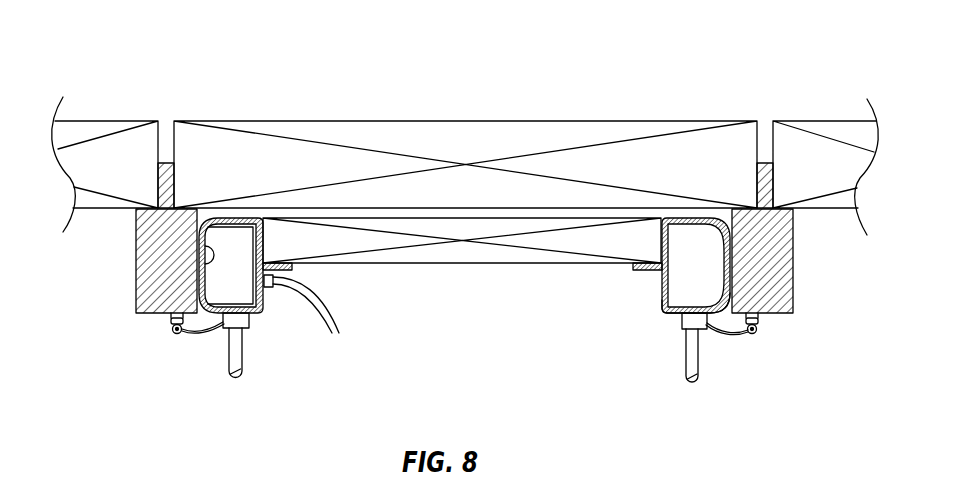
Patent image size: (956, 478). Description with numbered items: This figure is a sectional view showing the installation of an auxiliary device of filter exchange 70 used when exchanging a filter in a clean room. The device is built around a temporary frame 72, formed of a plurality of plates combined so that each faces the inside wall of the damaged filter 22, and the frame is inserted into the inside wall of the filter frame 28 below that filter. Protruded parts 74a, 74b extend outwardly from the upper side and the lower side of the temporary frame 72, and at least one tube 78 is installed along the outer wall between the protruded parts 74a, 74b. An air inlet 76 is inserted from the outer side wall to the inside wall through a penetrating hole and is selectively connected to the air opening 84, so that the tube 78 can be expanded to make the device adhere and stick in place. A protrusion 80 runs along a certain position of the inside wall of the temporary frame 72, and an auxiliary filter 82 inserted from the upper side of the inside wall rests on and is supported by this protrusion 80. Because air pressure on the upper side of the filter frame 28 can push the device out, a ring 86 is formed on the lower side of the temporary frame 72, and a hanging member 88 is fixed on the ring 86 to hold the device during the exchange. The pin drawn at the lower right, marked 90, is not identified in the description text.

The auxiliary device of filter exchange 70 is at (595, 74).
The filter 22 is at (410, 121).
The filter frame 28 is at (793, 297).
The auxiliary filter 82 is at (524, 218).
The protruded part 74a is at (256, 218).
The protruded part 74b is at (661, 297).
The tube 78 is at (212, 262).
The air inlet 76 is at (254, 282).
The air opening 84 is at (268, 290).
The protrusion 80 is at (292, 268).
The temporary frame 72 is at (259, 323).
The ring 86 is at (169, 333).
The hanging member 88 is at (210, 331).
The pin 90 is at (689, 377).